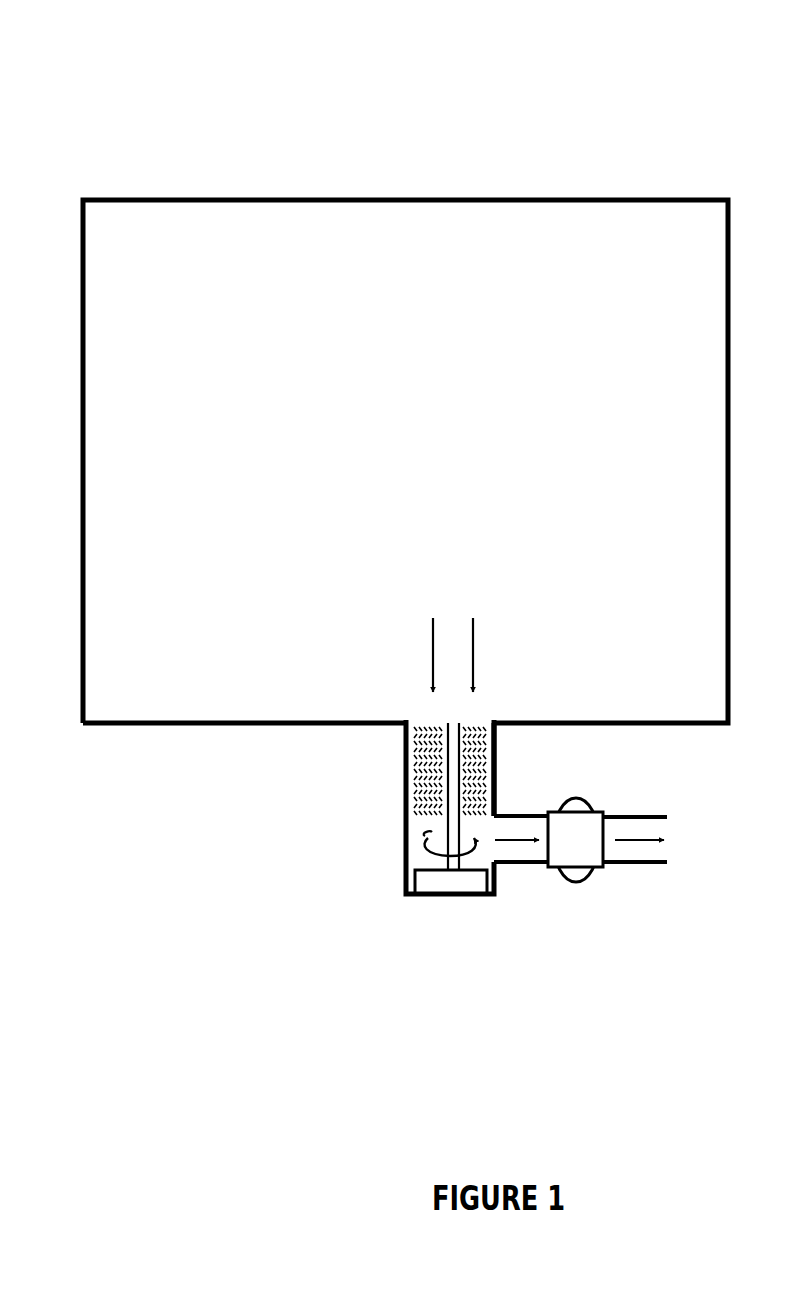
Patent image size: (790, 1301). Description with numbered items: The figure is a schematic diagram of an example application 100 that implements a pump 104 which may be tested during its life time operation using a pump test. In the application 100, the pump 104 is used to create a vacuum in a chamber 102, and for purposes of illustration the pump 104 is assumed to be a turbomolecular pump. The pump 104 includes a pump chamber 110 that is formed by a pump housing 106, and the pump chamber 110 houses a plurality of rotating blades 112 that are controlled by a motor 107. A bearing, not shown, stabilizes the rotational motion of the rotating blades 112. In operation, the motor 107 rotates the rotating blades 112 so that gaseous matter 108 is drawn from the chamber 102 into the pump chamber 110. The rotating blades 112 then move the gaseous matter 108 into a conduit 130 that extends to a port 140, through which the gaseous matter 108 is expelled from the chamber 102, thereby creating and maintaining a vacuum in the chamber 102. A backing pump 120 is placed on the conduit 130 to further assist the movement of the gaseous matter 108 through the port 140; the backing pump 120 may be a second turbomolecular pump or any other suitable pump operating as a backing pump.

The application 100 is at (630, 153).
The chamber 102 is at (193, 292).
The pump 104 is at (374, 789).
The pump housing 106 is at (497, 760).
The motor 107 is at (436, 861).
The gaseous matter 108 is at (416, 671).
The pump chamber 110 is at (420, 712).
The rotating blades 112 is at (484, 716).
The backing pump 120 is at (558, 795).
The conduit 130 is at (524, 864).
The port 140 is at (672, 851).